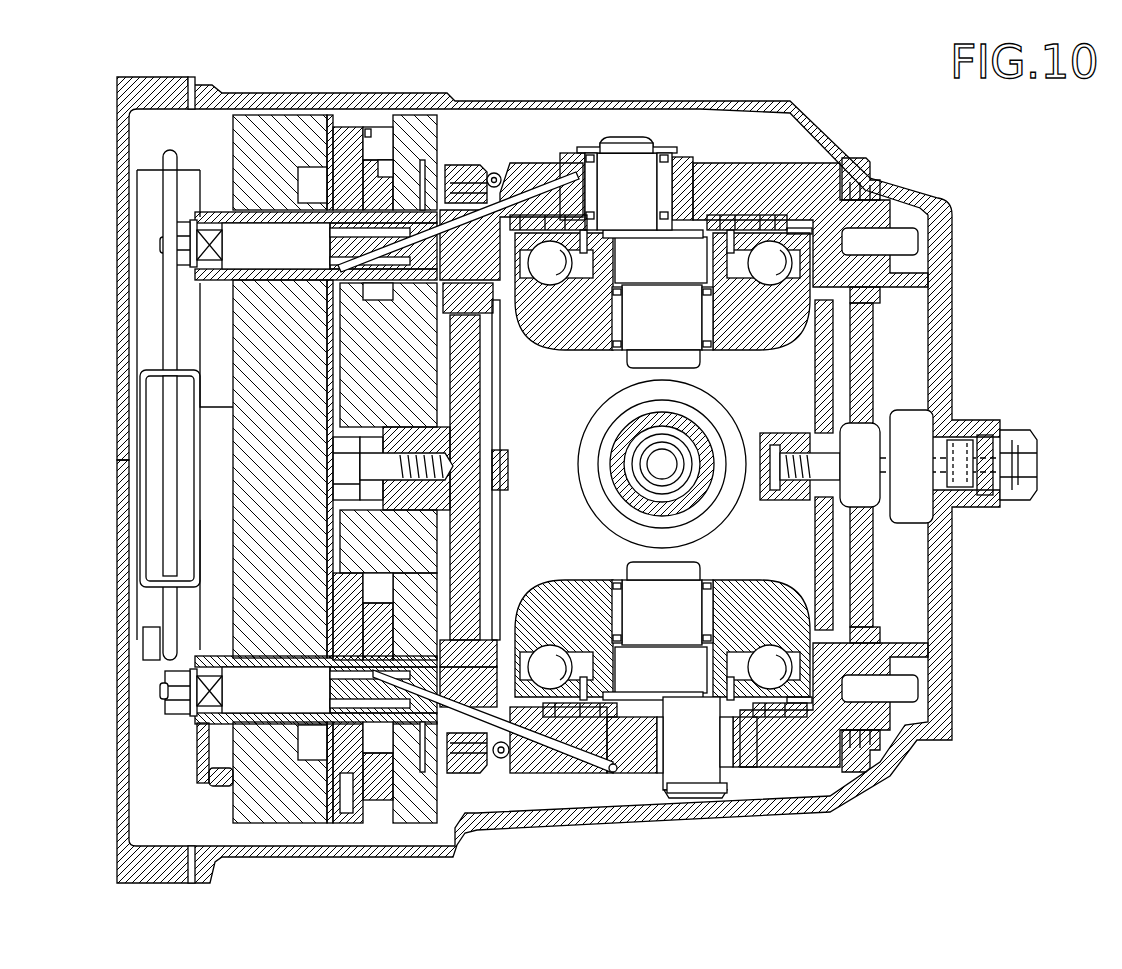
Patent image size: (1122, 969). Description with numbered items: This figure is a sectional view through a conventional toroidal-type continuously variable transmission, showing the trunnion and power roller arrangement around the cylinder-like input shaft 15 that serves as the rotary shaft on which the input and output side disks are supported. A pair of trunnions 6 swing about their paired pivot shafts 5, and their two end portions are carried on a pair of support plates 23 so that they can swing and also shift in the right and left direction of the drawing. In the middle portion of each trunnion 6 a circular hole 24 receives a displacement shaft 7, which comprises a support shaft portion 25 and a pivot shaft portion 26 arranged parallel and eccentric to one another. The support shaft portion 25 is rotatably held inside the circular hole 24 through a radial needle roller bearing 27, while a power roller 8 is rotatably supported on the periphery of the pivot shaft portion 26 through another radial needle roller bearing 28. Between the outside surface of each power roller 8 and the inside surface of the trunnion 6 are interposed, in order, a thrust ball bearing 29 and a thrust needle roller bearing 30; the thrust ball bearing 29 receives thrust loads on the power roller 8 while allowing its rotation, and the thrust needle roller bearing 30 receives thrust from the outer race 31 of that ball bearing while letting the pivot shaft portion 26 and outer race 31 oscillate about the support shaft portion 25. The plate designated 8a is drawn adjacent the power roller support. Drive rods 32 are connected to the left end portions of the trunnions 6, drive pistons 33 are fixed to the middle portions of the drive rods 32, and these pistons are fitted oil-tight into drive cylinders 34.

The pivot shaft 5 is at (467, 203).
The trunnion 6 is at (828, 152).
The displacement shaft 7 is at (683, 240).
The power roller 8 is at (793, 333).
The bearing holder plate 8a is at (770, 350).
The input shaft 15 is at (617, 470).
The support plate 23 is at (477, 545).
The circular hole 24 is at (595, 157).
The support shaft portion 25 is at (632, 165).
The pivot shaft portion 26 is at (647, 337).
The radial needle roller bearing 27 is at (660, 183).
The radial needle roller bearing 28 is at (612, 312).
The thrust ball bearing 29 is at (757, 263).
The thrust needle roller bearing 30 is at (753, 215).
The outer race 31 is at (793, 233).
The drive rod 32 is at (270, 233).
The drive piston 33 is at (373, 137).
The drive cylinder 34 is at (331, 128).